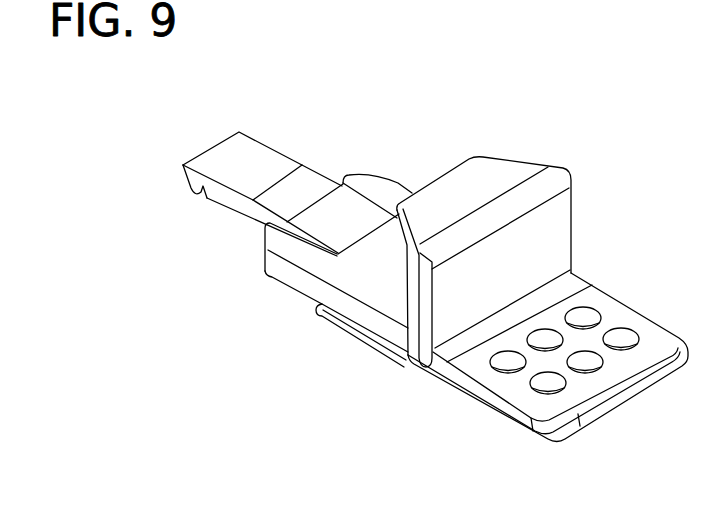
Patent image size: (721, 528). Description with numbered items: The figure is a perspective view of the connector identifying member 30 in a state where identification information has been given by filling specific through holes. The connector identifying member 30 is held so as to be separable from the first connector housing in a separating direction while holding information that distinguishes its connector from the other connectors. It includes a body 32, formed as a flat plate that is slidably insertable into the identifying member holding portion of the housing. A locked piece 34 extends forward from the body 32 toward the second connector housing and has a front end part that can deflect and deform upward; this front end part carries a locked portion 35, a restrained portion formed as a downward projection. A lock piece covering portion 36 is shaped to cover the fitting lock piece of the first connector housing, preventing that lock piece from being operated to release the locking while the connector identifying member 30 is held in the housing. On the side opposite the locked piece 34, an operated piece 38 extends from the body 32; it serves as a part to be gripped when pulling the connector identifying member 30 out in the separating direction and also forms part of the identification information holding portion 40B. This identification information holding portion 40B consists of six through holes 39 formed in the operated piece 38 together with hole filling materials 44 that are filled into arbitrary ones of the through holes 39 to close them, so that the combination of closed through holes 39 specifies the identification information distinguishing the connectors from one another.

The connector identifying member 30 is at (561, 124).
The body 32 is at (288, 277).
The locked piece 34 is at (257, 150).
The locked portion 35 is at (197, 195).
The lock piece covering portion 36 is at (452, 183).
The operated piece 38 is at (618, 377).
The through holes 39 is at (624, 328).
The hole filling materials 44 is at (543, 337).
The identification information holding portion 40B is at (453, 0).